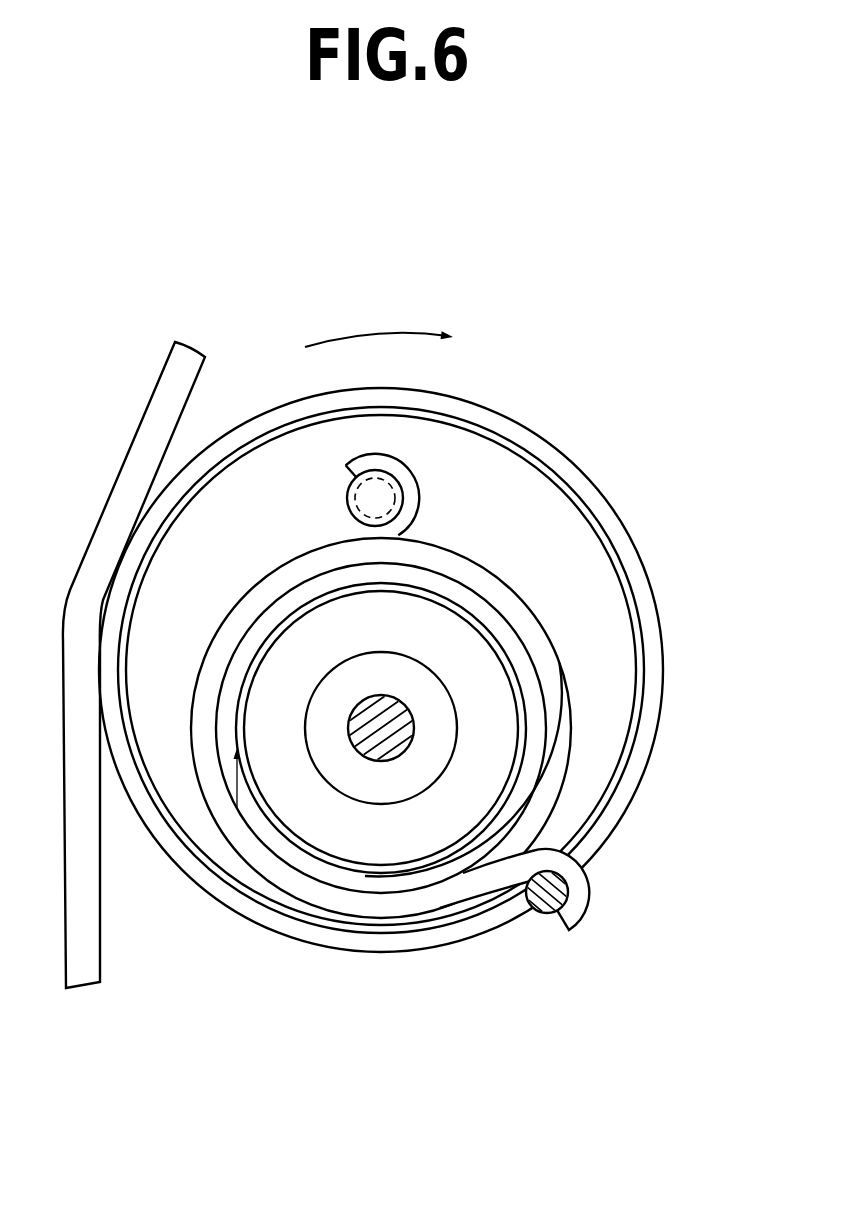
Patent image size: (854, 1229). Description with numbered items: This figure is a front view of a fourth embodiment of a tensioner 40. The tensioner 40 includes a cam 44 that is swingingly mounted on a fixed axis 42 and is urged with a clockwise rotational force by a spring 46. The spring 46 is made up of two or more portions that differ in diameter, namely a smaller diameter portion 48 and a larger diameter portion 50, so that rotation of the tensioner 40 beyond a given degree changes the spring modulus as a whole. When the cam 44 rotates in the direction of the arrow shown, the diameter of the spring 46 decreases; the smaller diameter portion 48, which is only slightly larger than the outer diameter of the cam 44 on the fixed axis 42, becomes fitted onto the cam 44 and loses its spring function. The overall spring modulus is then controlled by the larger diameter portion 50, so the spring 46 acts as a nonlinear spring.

The tensioner 40 is at (577, 450).
The fixed axis 42 is at (384, 747).
The cam 44 is at (257, 430).
The spring 46 is at (236, 868).
The smaller diameter portion 48 is at (520, 673).
The larger diameter portion 50 is at (555, 748).